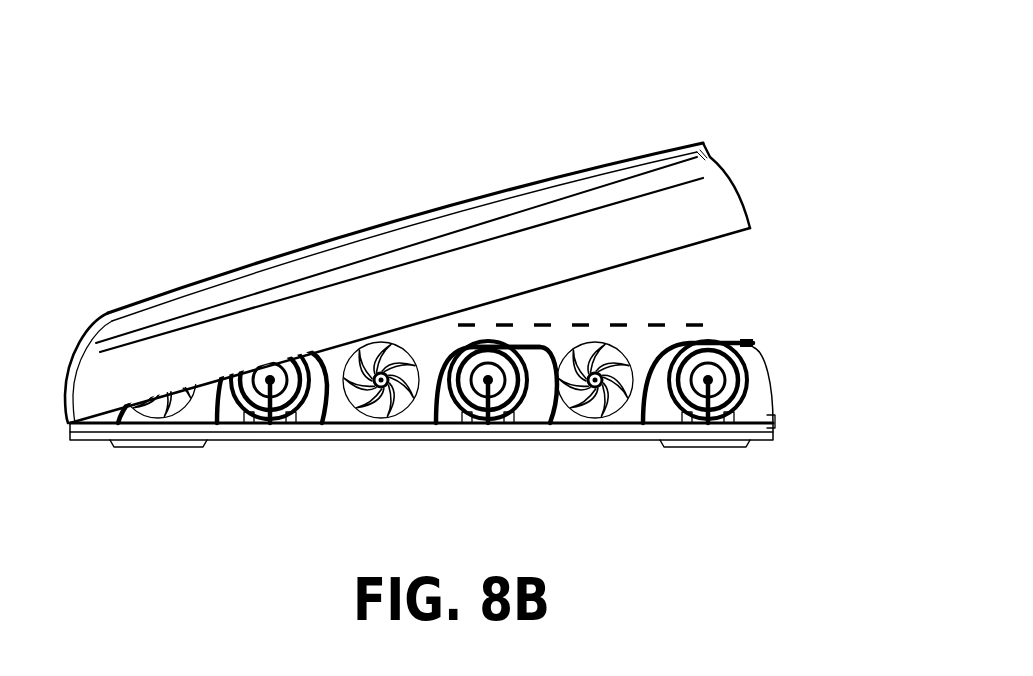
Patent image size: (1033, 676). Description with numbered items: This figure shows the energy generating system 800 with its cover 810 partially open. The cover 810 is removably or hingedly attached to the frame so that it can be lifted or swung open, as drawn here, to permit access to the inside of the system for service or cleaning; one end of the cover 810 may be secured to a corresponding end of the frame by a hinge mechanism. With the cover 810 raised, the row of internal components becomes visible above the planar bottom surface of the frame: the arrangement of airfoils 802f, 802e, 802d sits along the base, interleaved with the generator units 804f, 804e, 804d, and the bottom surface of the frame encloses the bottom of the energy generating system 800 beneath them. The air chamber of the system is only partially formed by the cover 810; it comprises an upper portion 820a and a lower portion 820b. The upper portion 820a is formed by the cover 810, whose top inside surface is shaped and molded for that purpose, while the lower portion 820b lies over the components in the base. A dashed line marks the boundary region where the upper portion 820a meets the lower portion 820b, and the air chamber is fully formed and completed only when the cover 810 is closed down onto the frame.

The energy generating system 800 is at (372, 118).
The cover 810 is at (716, 188).
The upper portion of the air chamber 820a is at (617, 322).
The lower portion of the air chamber 820b is at (540, 345).
The airfoil 802d is at (580, 405).
The airfoil 802e is at (357, 407).
The airfoil 802f is at (170, 405).
The speaker 804d is at (692, 405).
The speaker 804e is at (470, 398).
The speaker 804f is at (253, 395).